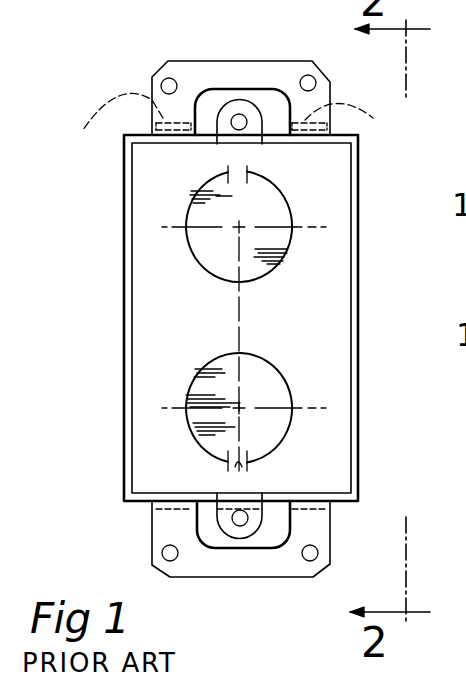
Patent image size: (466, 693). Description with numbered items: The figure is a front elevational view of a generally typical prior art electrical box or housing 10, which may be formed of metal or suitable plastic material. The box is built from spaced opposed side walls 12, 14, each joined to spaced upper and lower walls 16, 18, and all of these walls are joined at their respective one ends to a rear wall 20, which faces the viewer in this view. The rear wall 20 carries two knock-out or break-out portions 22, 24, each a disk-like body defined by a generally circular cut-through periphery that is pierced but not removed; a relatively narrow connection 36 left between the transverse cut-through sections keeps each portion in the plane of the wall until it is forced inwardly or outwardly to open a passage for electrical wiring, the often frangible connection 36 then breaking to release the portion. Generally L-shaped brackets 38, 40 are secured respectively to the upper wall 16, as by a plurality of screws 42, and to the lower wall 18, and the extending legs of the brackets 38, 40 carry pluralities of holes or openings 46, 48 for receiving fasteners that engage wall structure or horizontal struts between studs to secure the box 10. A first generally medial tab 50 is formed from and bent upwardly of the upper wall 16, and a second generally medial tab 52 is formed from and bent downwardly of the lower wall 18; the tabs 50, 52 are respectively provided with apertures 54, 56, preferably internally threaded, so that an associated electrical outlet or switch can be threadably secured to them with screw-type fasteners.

The electrical box 10 is at (84, 99).
The side wall 12 is at (123, 338).
The side wall 14 is at (360, 357).
The upper wall 16 is at (273, 120).
The lower wall 18 is at (213, 510).
The rear wall 20 is at (161, 377).
The knock-out portion 22 is at (212, 259).
The knock-out portion 24 is at (268, 376).
The connection 36 is at (234, 463).
The L-shaped bracket 38 is at (152, 88).
The L-shaped bracket 40 is at (152, 533).
The screws 42 is at (235, 132).
The holes 46 is at (178, 79).
The holes 48 is at (161, 558).
The medial tab 50 is at (222, 104).
The medial tab 52 is at (261, 512).
The aperture 54 is at (243, 124).
The aperture 56 is at (238, 522).